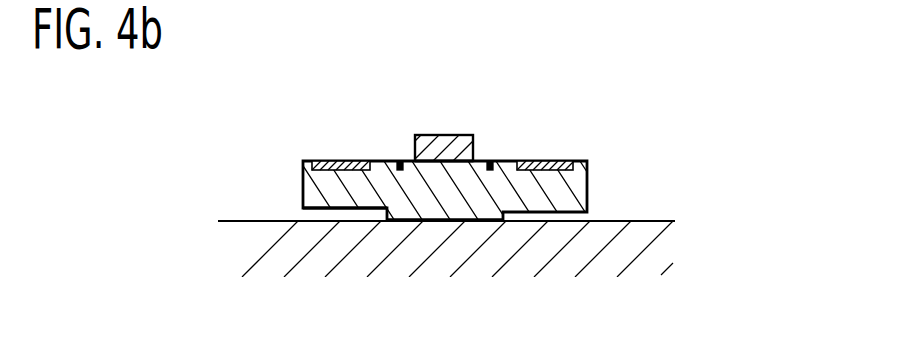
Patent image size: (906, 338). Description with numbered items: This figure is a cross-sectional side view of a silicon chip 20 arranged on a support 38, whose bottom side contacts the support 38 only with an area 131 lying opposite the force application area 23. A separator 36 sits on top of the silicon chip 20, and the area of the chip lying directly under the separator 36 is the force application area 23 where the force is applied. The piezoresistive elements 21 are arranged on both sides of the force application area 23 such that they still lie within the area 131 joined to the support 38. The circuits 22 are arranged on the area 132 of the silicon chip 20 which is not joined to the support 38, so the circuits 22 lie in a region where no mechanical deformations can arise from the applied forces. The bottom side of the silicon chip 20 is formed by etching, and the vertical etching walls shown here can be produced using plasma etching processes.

The silicon chip 20 is at (606, 186).
The piezoresistive elements 21 is at (399, 162).
The circuits 22 is at (322, 161).
The force application area 23 is at (475, 158).
The separator 36 is at (438, 147).
The support 38 is at (652, 262).
The area joined to the support 131 is at (433, 226).
The area not joined to the support 132 is at (344, 226).